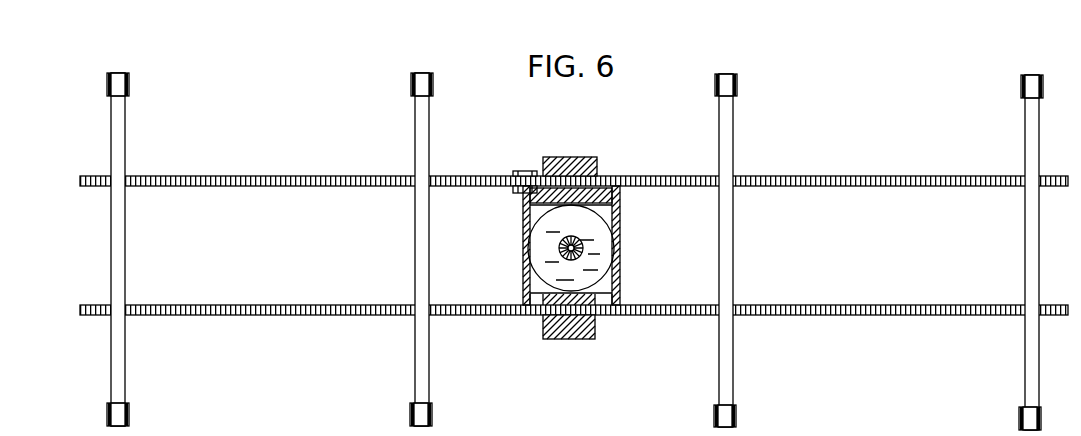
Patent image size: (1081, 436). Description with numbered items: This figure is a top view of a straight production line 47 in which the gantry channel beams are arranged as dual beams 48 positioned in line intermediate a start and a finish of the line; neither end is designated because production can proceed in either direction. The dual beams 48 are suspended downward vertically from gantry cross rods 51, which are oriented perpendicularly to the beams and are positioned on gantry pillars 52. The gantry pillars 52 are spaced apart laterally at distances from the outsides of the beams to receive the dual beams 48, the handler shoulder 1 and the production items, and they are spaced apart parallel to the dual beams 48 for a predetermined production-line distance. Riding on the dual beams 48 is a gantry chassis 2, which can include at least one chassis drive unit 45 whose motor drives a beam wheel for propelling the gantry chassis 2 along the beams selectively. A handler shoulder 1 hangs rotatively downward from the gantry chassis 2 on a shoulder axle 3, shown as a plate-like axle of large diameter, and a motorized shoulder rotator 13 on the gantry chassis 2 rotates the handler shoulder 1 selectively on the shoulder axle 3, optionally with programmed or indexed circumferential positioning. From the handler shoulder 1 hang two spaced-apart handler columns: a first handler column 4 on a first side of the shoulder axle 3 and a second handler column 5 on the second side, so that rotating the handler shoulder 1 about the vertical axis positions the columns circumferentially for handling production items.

The handler shoulder 1 is at (613, 191).
The gantry chassis 2 is at (617, 222).
The shoulder axle 3 is at (597, 250).
The first handler column 4 is at (565, 155).
The second handler column 5 is at (553, 340).
The motorized shoulder rotator 13 is at (577, 254).
The chassis drive unit 45 is at (525, 175).
The straight production line 47 is at (96, 58).
The dual beams 48 is at (267, 167).
The gantry cross rods 51 is at (416, 245).
The gantry pillars 52 is at (411, 86).